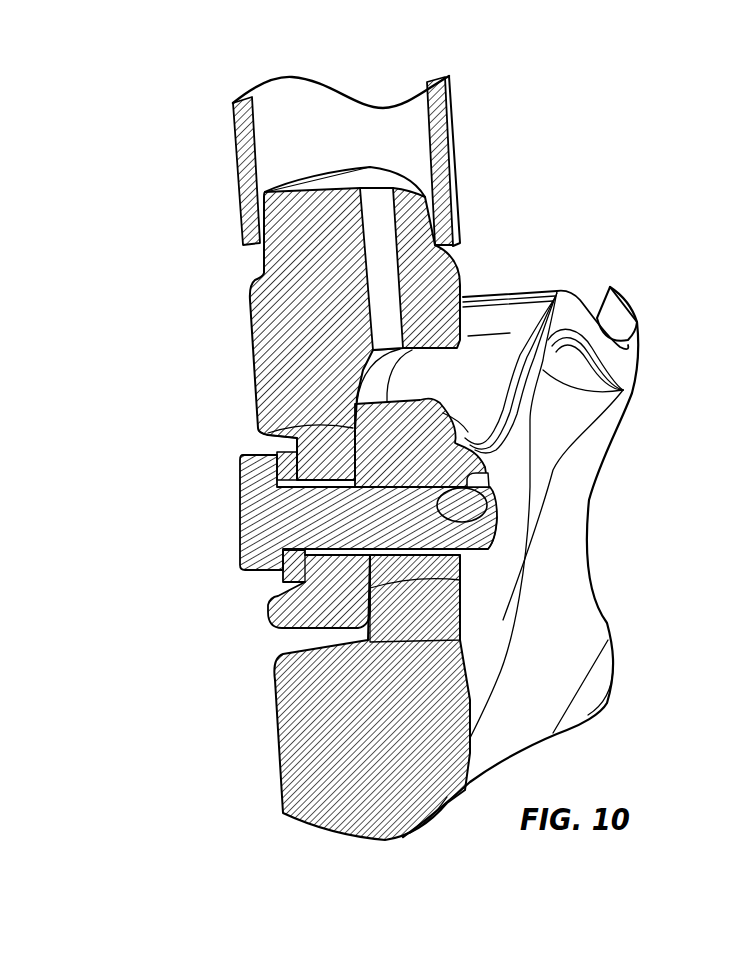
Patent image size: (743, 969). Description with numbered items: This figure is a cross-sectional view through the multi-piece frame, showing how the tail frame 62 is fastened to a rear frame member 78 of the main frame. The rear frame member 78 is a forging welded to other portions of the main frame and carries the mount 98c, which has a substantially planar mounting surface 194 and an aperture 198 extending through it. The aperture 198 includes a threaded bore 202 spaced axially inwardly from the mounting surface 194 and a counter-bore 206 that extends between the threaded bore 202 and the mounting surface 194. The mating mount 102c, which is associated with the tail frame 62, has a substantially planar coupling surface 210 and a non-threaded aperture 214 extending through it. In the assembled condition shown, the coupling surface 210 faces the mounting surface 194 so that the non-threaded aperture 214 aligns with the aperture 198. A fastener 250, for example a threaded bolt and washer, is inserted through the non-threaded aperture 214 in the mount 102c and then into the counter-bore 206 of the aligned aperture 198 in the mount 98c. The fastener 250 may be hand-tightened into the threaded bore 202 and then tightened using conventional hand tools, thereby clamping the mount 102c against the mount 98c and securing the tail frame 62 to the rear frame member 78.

The tail frame 62 is at (443, 147).
The rear frame member 78 is at (540, 710).
The mount 98c is at (447, 670).
The mount 102c is at (268, 310).
The mounting surface 194 is at (256, 428).
The aperture 198 is at (495, 511).
The threaded bore 202 is at (470, 527).
The counter-bore 206 is at (485, 548).
The coupling surface 210 is at (400, 572).
The non-threaded aperture 214 is at (300, 537).
The fastener 250 is at (258, 487).